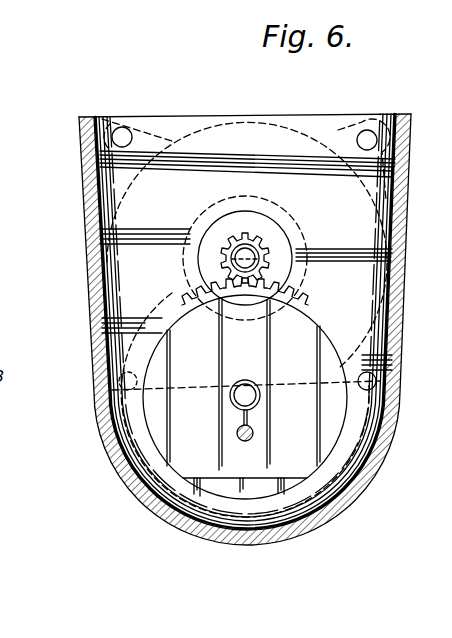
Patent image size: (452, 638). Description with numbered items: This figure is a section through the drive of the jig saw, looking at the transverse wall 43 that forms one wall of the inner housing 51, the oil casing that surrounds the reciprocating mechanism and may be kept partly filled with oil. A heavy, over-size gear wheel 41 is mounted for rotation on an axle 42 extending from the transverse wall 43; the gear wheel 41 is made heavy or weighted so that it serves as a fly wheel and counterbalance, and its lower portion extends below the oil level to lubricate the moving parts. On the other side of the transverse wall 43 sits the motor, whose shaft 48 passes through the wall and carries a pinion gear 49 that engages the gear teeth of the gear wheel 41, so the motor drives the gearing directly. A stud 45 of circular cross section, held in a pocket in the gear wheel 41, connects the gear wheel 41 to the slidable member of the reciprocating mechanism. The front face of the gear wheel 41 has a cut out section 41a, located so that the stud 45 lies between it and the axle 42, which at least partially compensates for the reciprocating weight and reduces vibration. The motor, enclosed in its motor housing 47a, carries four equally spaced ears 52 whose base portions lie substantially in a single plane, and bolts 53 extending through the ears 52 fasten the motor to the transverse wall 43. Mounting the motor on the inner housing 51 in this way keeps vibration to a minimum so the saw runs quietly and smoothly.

The gear wheel 41 is at (314, 303).
The cut out section 41a is at (226, 488).
The axle 42 is at (259, 381).
The transverse wall 43 is at (380, 470).
The stud 45 is at (254, 433).
The motor housing 47a is at (398, 203).
The shaft 48 is at (268, 253).
The pinion gear 49 is at (252, 247).
The inner housing 51 is at (90, 276).
The ears 52 is at (172, 130).
The bolts 53 is at (375, 131).